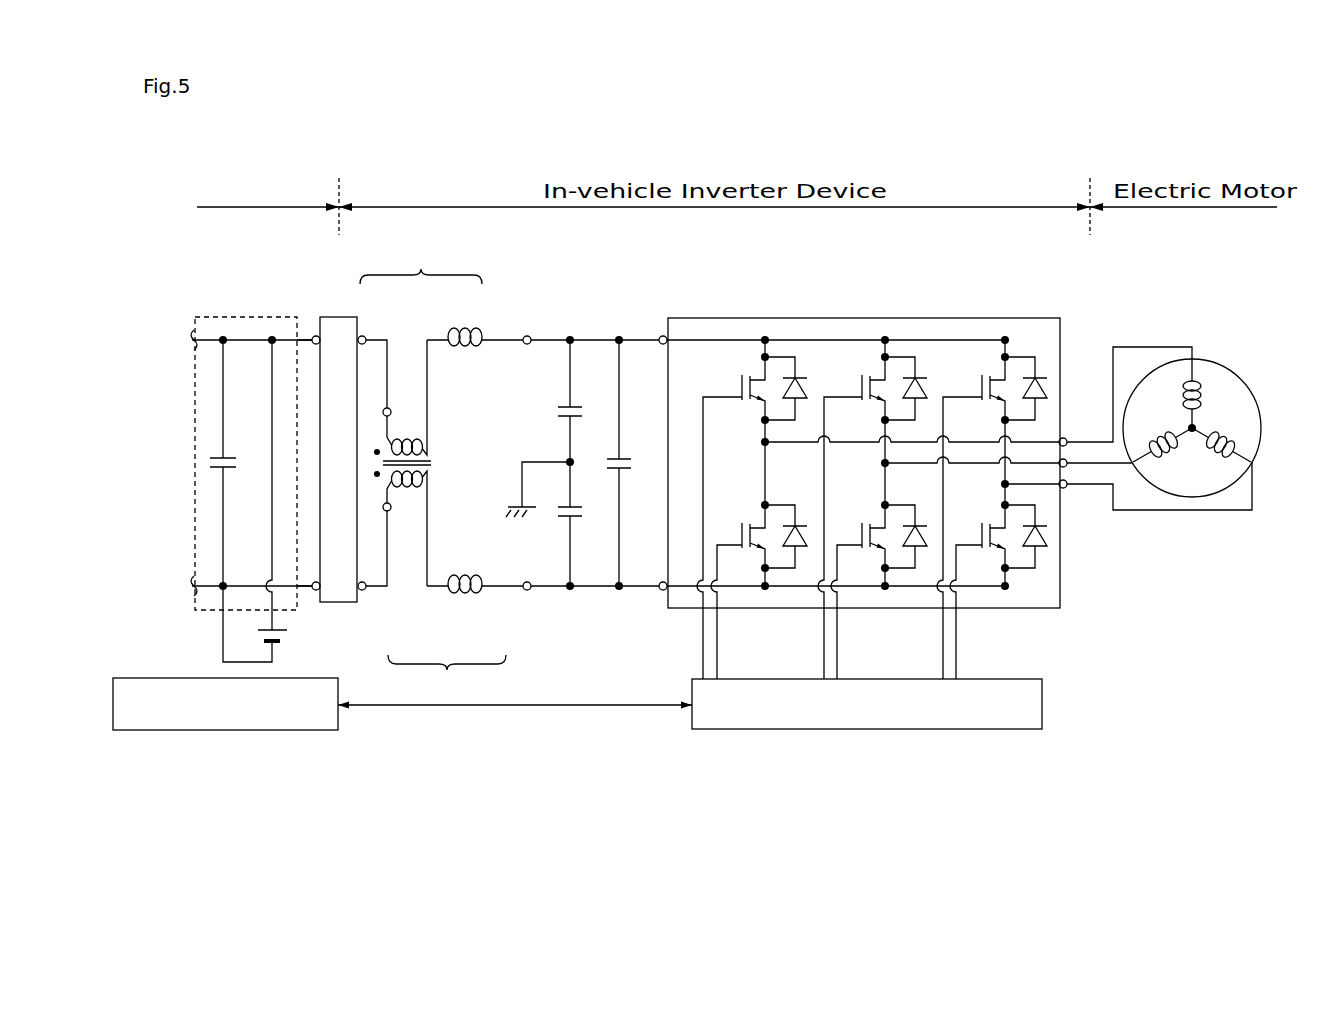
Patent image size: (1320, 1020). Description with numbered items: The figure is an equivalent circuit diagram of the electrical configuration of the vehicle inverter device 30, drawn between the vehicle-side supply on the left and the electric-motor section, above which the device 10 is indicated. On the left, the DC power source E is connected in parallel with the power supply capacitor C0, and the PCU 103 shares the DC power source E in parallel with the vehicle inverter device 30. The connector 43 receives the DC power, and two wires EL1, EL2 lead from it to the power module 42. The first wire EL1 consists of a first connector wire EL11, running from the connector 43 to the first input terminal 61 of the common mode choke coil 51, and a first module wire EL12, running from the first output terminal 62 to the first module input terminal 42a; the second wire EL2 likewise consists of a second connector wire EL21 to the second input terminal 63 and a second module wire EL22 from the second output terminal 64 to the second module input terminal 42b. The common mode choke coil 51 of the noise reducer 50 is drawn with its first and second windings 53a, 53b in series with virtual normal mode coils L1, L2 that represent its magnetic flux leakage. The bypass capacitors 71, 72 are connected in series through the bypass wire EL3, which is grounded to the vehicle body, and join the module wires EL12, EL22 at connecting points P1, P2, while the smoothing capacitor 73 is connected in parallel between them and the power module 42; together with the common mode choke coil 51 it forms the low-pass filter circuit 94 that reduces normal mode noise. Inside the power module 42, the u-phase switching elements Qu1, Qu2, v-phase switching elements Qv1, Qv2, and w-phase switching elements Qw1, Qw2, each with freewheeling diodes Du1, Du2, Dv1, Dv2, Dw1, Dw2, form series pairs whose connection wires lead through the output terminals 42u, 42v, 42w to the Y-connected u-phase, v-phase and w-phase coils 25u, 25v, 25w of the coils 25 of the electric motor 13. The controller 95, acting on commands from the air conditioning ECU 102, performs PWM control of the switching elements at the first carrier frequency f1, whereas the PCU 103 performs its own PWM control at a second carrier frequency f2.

The electric motor 10 is at (1200, 172).
The electric motor 13 is at (1235, 305).
The coils 25 is at (1209, 357).
The u-phase coil 25u is at (1203, 395).
The v-phase coil 25v is at (1164, 452).
The w-phase coil 25w is at (1224, 449).
The vehicle inverter device 30 is at (1048, 300).
The power module 42 is at (865, 318).
The first module input terminal 42a is at (662, 344).
The second module input terminal 42b is at (660, 584).
The u-phase output terminal 42u is at (1068, 441).
The v-phase module output terminal 42v is at (1068, 467).
The w-phase module output terminal 42w is at (1070, 488).
The connector 43 is at (332, 318).
The noise reducer 50 is at (600, 299).
The common mode choke coil 51 is at (495, 310).
The first winding 53a is at (418, 442).
The second winding 53b is at (414, 484).
The first input terminal 61 is at (384, 408).
The first output terminal 62 is at (526, 344).
The second input terminal 63 is at (385, 514).
The second output terminal 64 is at (527, 582).
The first bypass capacitor 71 is at (574, 408).
The second bypass capacitor 72 is at (574, 506).
The smoothing capacitor 73 is at (622, 458).
The low-pass filter circuit 94 is at (650, 322).
The controller 95 is at (1028, 682).
The air conditioning ECU 102 is at (306, 678).
The power control unit (PCU) 103 is at (245, 316).
The power supply capacitor C0 is at (228, 472).
The DC power source E is at (288, 628).
The virtual normal mode coil L1 is at (470, 348).
The virtual normal mode coil L2 is at (478, 576).
The connecting point P1 is at (571, 336).
The connecting point P2 is at (570, 590).
The first wire EL1 is at (421, 263).
The first connector wire EL11 is at (386, 332).
The first module wire EL12 is at (547, 336).
The second wire EL2 is at (447, 673).
The second connector wire EL21 is at (374, 594).
The second module wire EL22 is at (542, 594).
The bypass wire EL3 is at (568, 439).
The first u-phase switching element Qu1 is at (738, 390).
The second u-phase switching element Qu2 is at (738, 536).
The v-phase switching element Qv1 is at (858, 390).
The v-phase switching element Qv2 is at (860, 536).
The w-phase switching element Qw1 is at (978, 390).
The w-phase switching element Qw2 is at (980, 536).
The freewheeling diode Du1 is at (804, 370).
The freewheeling diode Du2 is at (802, 522).
The freewheeling diode Dv1 is at (924, 370).
The freewheeling diode Dv2 is at (921, 522).
The freewheeling diode Dw1 is at (1040, 372).
The freewheeling diode Dw2 is at (1046, 544).
The first carrier frequency f1 is at (650, 255).
The second carrier frequency f2 is at (360, 255).